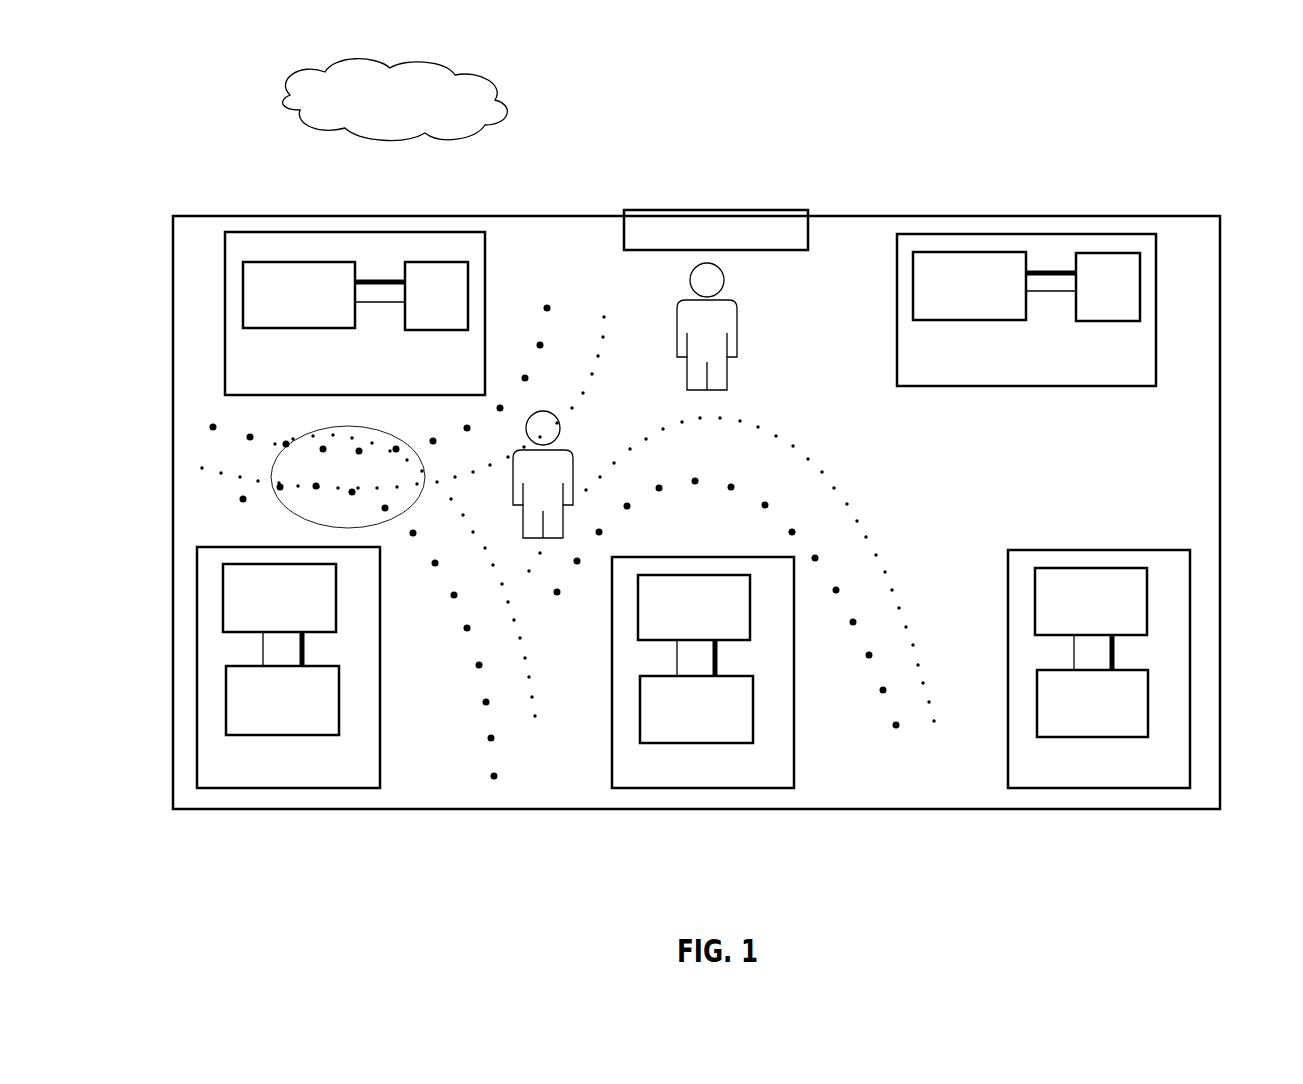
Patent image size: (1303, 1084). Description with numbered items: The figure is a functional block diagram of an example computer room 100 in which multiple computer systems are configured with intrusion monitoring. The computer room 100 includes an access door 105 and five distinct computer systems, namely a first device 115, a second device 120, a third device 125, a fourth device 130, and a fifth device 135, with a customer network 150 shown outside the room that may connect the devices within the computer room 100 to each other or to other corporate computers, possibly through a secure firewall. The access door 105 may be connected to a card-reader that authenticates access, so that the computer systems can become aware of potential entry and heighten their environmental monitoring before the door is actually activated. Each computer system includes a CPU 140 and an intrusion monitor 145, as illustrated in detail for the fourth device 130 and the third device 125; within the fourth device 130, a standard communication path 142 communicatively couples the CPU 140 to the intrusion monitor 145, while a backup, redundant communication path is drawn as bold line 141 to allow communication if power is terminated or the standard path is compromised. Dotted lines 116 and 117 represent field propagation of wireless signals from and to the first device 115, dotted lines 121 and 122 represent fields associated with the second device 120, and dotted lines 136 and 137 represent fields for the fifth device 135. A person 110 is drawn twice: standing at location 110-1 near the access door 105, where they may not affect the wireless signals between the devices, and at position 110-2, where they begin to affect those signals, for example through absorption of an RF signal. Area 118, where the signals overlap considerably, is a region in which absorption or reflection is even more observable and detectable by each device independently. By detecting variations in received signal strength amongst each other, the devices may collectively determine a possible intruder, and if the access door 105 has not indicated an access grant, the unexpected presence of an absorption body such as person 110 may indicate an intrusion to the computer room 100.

The computer room 100 is at (960, 107).
The access door 105 is at (780, 215).
The person 110 is at (661, 400).
The location 110-1 is at (720, 326).
The position 110-2 is at (556, 480).
The device 1 115 is at (316, 788).
The dotted line 116 is at (495, 777).
The dotted line 117 is at (537, 735).
The area 118 is at (278, 507).
The device 2 120 is at (660, 790).
The dotted line 121 is at (897, 733).
The dotted line 122 is at (934, 732).
The device 3 125 is at (1077, 788).
The device 4 130 is at (1000, 237).
The device 5 135 is at (313, 232).
The dotted line 136 is at (547, 308).
The dotted line 137 is at (606, 312).
The CPU 140 is at (1110, 257).
The redundant communication path 141 is at (1040, 272).
The standard communication path 142 is at (1043, 293).
The intrusion monitor 145 is at (924, 252).
The customer network 150 is at (288, 75).